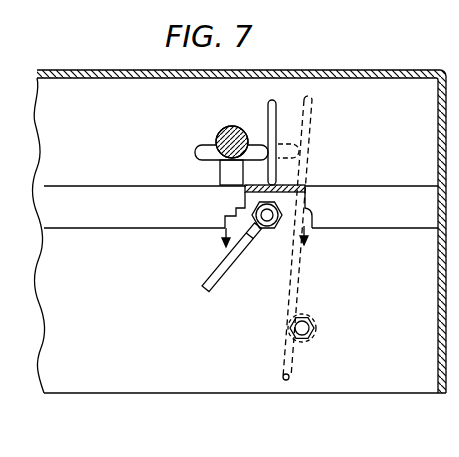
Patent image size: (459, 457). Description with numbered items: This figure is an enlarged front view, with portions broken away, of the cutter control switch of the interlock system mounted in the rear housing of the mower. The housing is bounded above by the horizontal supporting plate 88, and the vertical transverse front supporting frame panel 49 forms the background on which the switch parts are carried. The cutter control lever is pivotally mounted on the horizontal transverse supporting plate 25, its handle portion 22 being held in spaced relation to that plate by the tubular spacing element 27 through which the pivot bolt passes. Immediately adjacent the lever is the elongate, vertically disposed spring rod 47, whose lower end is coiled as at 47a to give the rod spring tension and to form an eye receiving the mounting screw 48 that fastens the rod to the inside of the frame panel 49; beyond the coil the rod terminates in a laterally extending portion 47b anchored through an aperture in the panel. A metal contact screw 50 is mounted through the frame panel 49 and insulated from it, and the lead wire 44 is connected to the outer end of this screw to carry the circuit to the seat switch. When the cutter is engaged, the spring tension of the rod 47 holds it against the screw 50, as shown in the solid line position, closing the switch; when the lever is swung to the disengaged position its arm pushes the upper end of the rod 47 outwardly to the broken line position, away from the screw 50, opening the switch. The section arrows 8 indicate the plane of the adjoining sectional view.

The horizontal supporting plate 88 is at (105, 70).
The horizontal transverse supporting plate 25 is at (96, 190).
The vertical transverse front supporting frame panel 49 is at (108, 348).
The tubular spacing element 27 is at (225, 172).
The horizontal handle portion 22 is at (226, 133).
The spring rod 47 is at (298, 114).
The metal screw 50 is at (262, 212).
The lead wire 44 is at (212, 278).
The section line 8- 8 is at (266, 240).
The mounting screw 48 is at (312, 323).
The coiled portion 47a is at (303, 314).
The laterally extending portion 47b is at (290, 377).